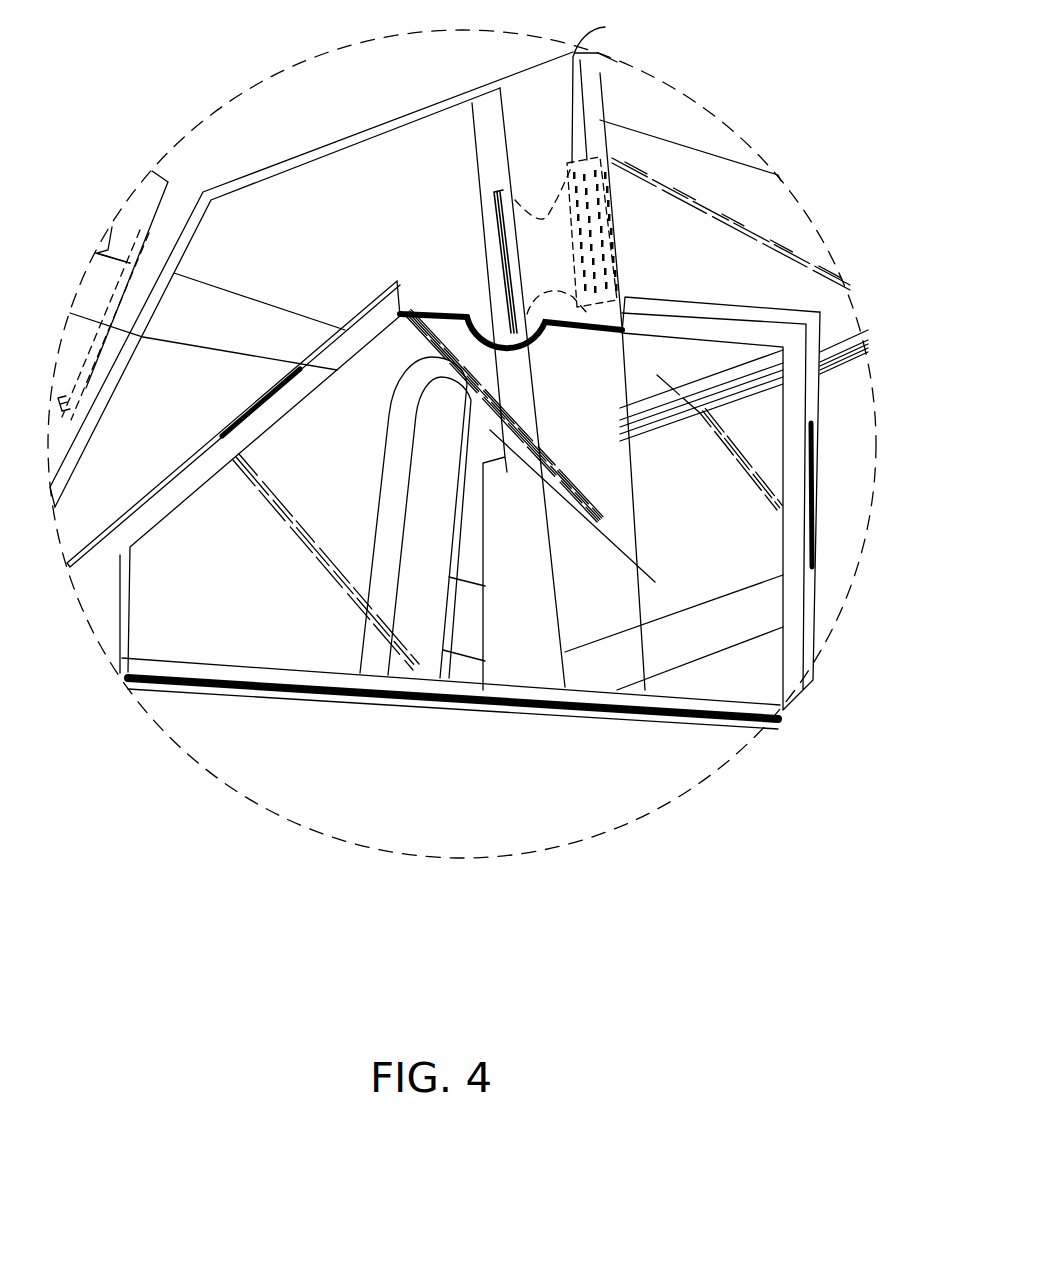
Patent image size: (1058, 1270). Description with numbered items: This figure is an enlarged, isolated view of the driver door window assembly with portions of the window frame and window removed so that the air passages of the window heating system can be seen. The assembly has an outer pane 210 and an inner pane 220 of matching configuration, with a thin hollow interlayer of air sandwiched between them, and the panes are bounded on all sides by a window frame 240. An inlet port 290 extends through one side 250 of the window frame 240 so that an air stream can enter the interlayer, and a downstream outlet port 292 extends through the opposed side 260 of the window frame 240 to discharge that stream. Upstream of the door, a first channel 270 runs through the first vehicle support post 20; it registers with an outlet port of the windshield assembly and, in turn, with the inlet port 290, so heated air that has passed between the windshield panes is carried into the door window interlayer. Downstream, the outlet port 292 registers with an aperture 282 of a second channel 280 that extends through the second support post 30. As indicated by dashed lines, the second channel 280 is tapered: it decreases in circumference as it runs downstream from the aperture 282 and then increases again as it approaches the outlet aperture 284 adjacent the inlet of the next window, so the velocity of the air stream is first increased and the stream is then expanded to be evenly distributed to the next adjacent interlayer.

The windshield support post 20 is at (158, 253).
The second support post 30 is at (544, 123).
The outer pane 210 is at (420, 311).
The inner pane 220 is at (447, 312).
The window frame 240 is at (707, 323).
The one side of the window frame 250 is at (147, 497).
The opposed side of the window frame 260 is at (857, 280).
The first channel 270 is at (103, 360).
The second channel 280 is at (535, 237).
The aperture 282 is at (490, 193).
The outlet aperture 284 is at (600, 29).
The inlet port 290 is at (284, 386).
The outlet port 292 is at (817, 530).